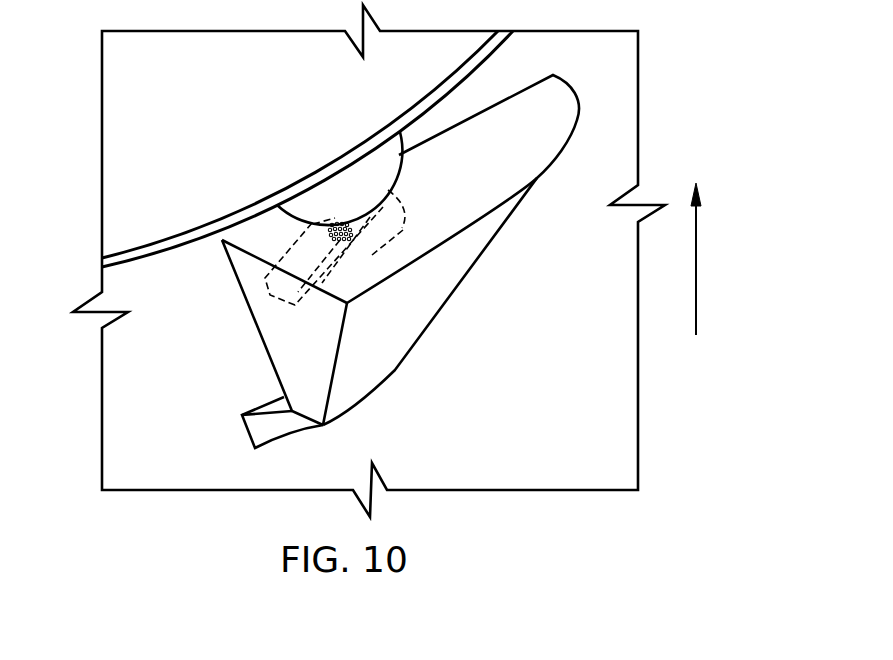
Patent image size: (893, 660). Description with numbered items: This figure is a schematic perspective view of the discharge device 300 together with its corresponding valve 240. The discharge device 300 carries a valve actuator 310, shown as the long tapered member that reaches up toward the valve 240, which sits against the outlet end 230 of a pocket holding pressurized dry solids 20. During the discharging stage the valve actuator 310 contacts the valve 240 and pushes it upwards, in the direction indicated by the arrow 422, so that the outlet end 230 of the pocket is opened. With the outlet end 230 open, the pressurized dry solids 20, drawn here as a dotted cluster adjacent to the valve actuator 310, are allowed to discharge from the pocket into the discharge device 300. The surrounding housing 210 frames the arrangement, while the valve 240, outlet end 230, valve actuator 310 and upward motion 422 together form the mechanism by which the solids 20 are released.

The housing 210 is at (122, 160).
The outlet end 230 is at (237, 217).
The valve 240 is at (380, 172).
The discharge device 300 is at (460, 324).
The valve actuator 310 is at (390, 223).
The pressurized dry solids 20 is at (336, 233).
The upward direction 422 is at (696, 270).